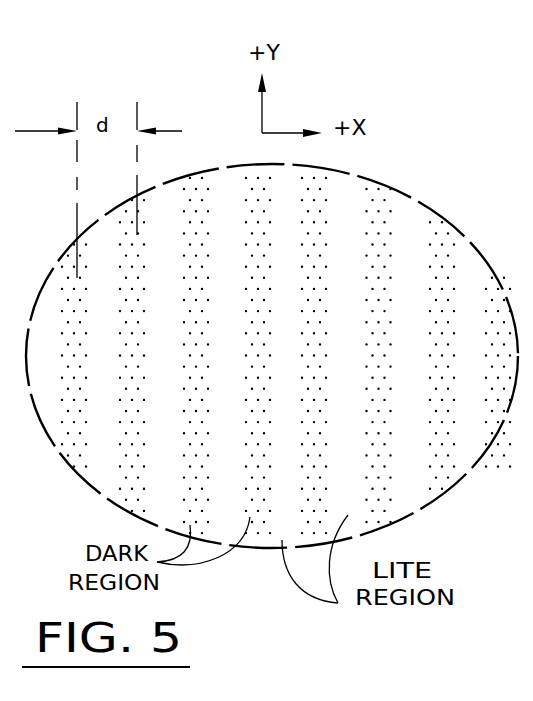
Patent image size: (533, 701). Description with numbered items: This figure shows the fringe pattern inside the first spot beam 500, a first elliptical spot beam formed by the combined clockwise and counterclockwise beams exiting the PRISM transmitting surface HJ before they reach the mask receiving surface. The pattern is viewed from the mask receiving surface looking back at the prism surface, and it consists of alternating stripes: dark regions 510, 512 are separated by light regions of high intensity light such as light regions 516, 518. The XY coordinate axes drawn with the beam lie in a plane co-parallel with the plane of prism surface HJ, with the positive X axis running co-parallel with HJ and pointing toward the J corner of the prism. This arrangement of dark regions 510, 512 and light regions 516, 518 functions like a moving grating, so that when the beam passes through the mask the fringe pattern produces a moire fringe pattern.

The illuminated spot 500 is at (68, 452).
The dark region stripe 510 is at (380, 213).
The dark region stripe 512 is at (435, 240).
The lite region stripe 516 is at (355, 188).
The lite region stripe 518 is at (477, 273).